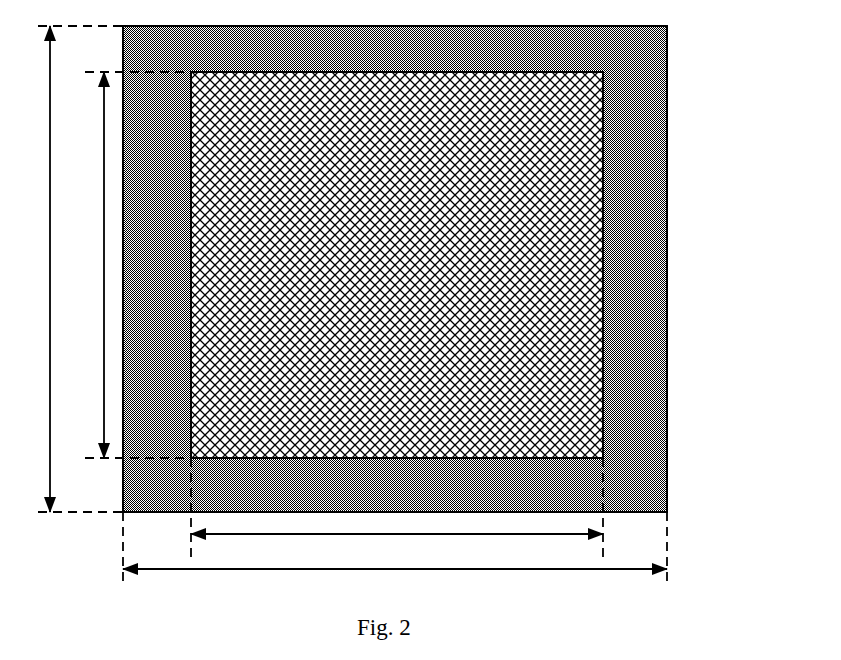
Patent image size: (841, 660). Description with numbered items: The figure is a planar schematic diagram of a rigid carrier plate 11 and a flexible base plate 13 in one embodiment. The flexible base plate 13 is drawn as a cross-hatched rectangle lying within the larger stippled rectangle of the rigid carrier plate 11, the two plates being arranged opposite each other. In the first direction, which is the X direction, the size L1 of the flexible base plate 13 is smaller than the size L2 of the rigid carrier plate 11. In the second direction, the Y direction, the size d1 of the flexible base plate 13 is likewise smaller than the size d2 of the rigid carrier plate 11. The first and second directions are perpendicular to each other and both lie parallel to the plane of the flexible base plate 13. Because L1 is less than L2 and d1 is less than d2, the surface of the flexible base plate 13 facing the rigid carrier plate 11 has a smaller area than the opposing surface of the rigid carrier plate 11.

The rigid carrier plate 11 is at (620, 312).
The flexible base plate 13 is at (530, 240).
The size of the flexible base plate in the second direction d1 is at (130, 265).
The size of the rigid carrier plate in the second direction d2 is at (70, 269).
The size of the flexible base plate in the first direction L1 is at (397, 516).
The size of the rigid carrier plate in the first direction L2 is at (395, 559).